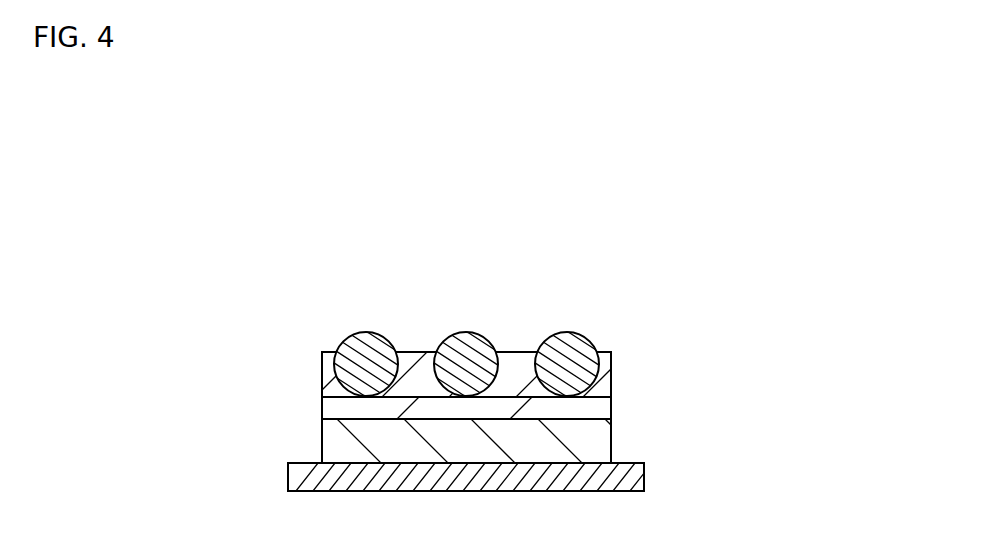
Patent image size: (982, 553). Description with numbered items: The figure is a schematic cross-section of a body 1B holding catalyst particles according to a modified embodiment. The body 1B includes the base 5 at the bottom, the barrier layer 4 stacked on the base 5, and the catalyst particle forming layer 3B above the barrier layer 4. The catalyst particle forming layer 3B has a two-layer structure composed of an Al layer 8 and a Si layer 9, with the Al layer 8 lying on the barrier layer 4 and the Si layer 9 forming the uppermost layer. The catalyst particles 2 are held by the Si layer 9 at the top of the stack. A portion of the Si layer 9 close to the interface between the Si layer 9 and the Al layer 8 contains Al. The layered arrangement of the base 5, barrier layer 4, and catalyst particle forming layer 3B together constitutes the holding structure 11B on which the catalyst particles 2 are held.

The body holding catalyst particles 1B is at (575, 278).
The holding structure 11B is at (322, 350).
The catalyst particle 2 is at (580, 332).
The catalyst particle forming layer 3B is at (683, 353).
The Si layer 9 is at (613, 370).
The Al layer 8 is at (613, 405).
The barrier layer 4 is at (613, 441).
The base 5 is at (644, 478).